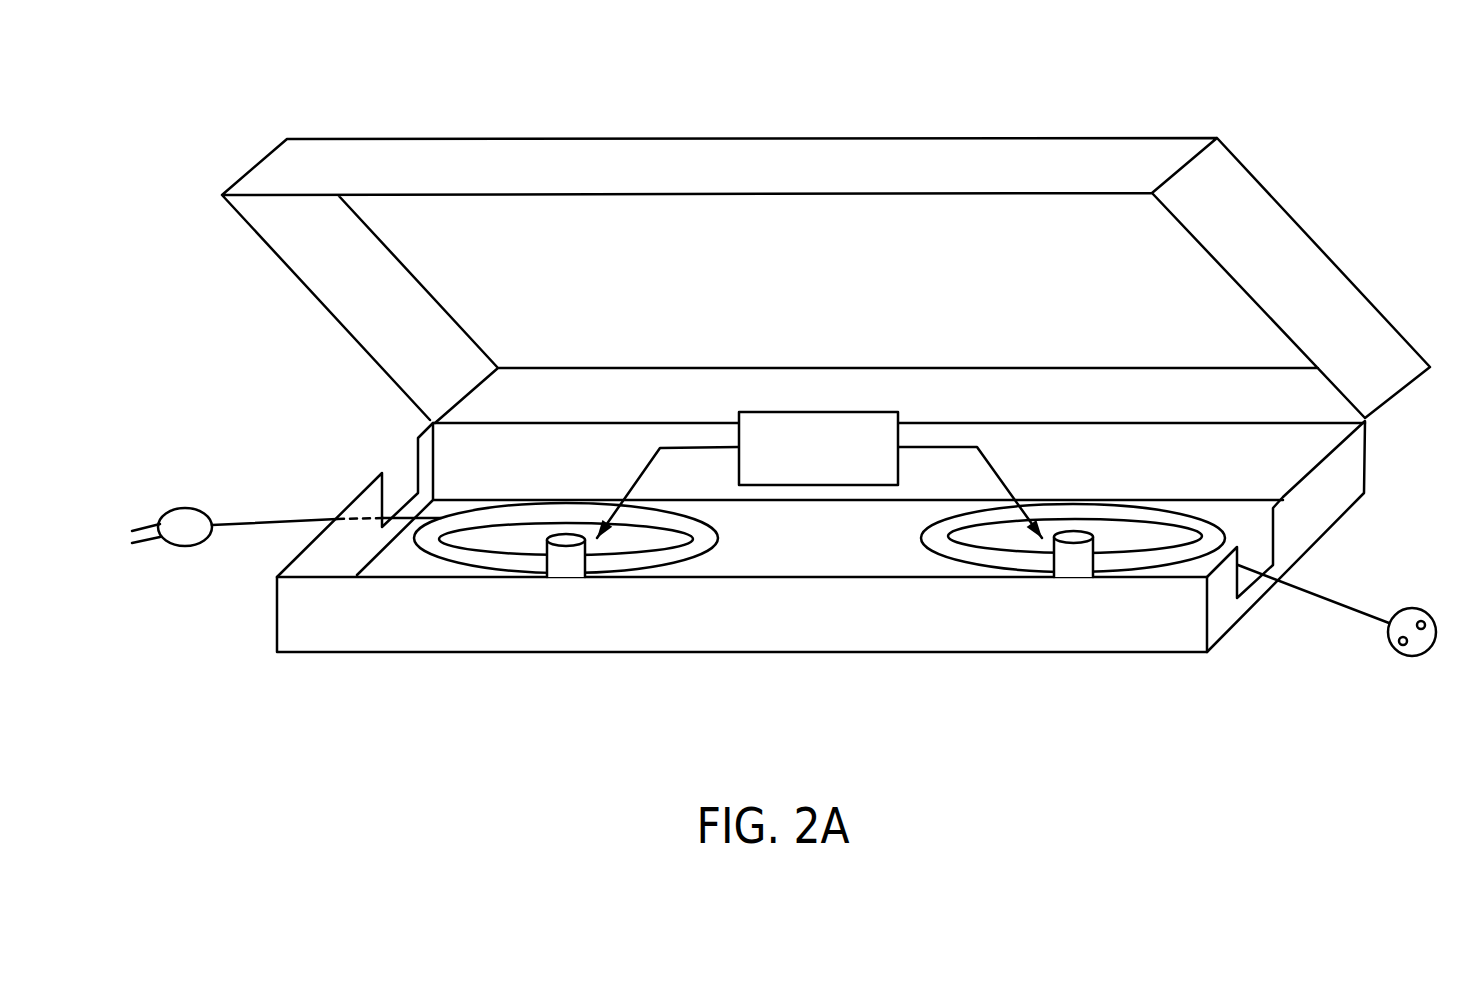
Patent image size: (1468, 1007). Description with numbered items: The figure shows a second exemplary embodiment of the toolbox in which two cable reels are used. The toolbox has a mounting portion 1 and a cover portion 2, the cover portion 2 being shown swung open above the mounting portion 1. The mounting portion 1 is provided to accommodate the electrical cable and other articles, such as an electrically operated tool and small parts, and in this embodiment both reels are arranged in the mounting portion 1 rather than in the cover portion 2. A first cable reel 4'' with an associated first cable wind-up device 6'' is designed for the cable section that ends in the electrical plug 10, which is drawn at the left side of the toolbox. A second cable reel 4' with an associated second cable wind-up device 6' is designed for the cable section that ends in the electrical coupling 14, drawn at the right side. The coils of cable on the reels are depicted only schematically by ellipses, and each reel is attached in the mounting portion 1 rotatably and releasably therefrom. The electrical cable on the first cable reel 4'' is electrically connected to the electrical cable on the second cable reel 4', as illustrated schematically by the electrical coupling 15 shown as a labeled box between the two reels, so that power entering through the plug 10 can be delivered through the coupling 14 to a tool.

The mounting portion 1 is at (650, 676).
The cover portion 2 is at (1363, 239).
The second cable reel 4' is at (1073, 504).
The first cable reel 4'' is at (566, 513).
The second cable wind-up device 6' is at (1085, 512).
The first cable wind-up device 6'' is at (577, 515).
The electrical plug 10 is at (188, 547).
The electrical coupling 14 is at (1412, 658).
The electrical coupling 15 is at (798, 412).